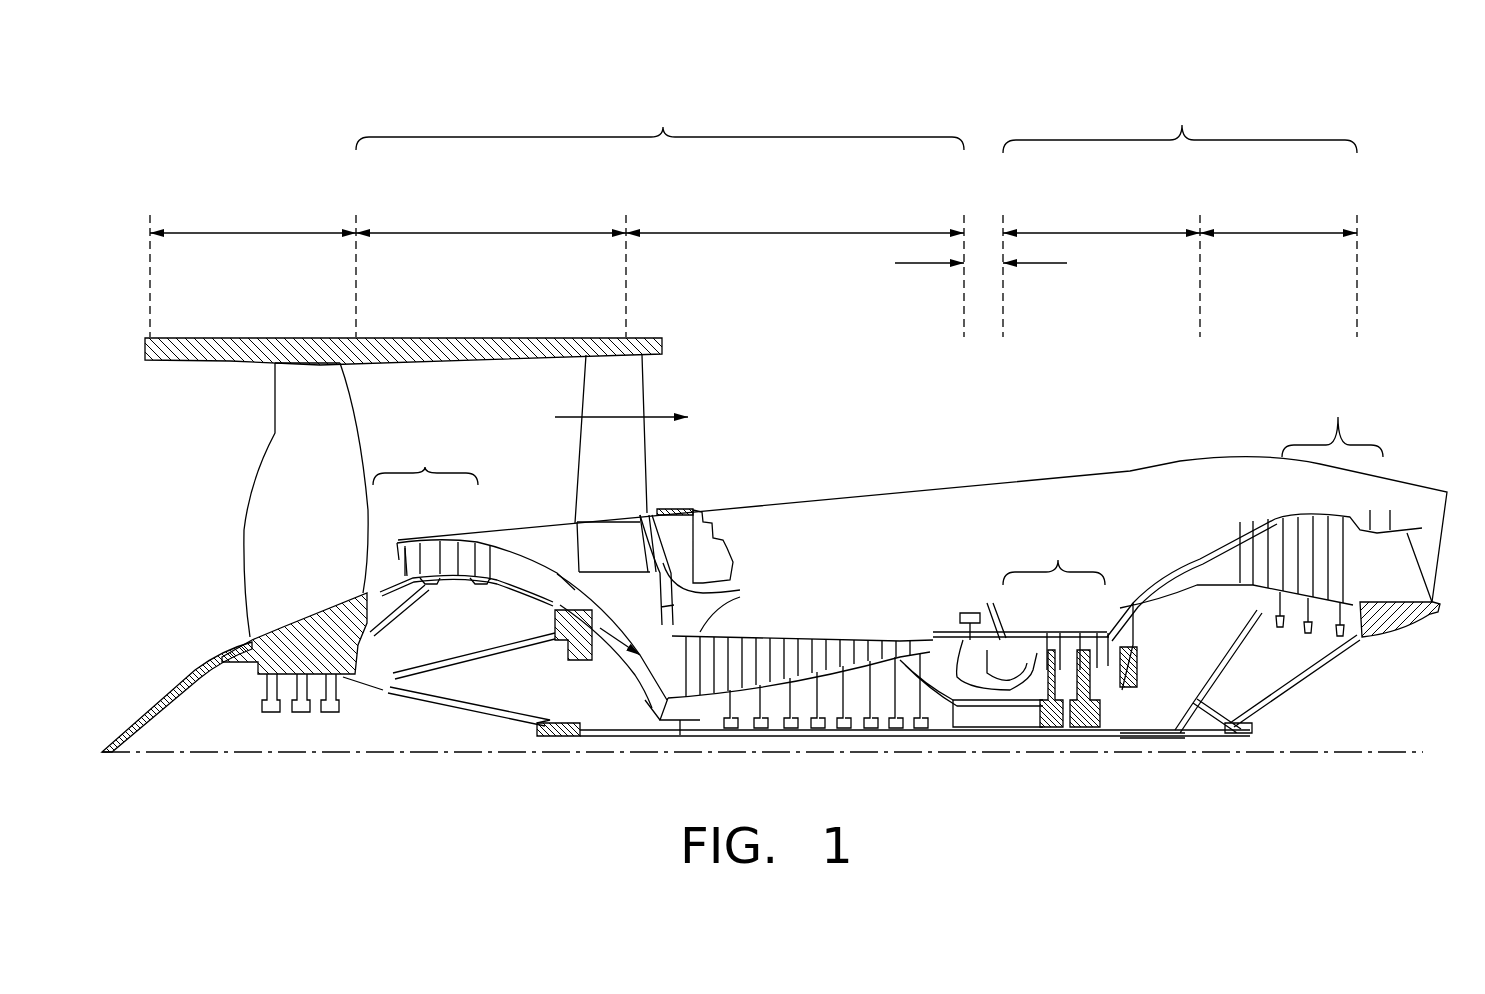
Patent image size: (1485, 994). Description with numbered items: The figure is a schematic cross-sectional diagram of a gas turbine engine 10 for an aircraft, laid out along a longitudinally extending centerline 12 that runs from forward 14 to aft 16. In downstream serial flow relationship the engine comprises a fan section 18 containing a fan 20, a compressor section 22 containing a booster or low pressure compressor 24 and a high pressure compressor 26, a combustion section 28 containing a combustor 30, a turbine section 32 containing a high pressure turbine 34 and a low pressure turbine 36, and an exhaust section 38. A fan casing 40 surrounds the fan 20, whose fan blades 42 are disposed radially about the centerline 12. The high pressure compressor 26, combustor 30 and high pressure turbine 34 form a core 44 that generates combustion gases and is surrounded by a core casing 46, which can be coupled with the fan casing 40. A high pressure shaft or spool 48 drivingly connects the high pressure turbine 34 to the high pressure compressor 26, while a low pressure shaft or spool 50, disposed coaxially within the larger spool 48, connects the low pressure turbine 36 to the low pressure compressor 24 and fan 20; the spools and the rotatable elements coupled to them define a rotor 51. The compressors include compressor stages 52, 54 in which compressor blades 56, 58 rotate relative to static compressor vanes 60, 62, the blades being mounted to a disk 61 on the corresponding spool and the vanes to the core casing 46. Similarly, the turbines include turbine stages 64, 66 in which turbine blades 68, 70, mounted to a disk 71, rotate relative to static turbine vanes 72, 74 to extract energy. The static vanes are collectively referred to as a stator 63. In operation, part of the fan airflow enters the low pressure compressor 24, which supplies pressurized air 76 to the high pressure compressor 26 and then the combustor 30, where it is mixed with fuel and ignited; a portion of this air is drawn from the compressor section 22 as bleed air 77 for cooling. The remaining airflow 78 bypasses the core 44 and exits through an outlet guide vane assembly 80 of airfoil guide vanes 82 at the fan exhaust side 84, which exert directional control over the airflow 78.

The gas turbine engine 10 is at (1372, 262).
The centerline 12 is at (233, 752).
The forward 14 is at (183, 480).
The aft 16 is at (1464, 570).
The fan section 18 is at (255, 232).
The fan 20 is at (227, 596).
The compressor section 22 is at (663, 127).
The low pressure compressor 24 is at (497, 232).
The high pressure compressor 26 is at (795, 232).
The combustion section 28 is at (908, 265).
The combustor 30 is at (995, 620).
The turbine section 32 is at (1182, 125).
The high pressure turbine 34 is at (1102, 232).
The low pressure turbine 36 is at (1277, 232).
The exhaust section 38 is at (1420, 548).
The fan casing 40 is at (392, 337).
The fan blades 42 is at (325, 410).
The core 44 is at (925, 525).
The core casing 46 is at (1185, 555).
The high pressure shaft 48 is at (965, 705).
The low pressure shaft 50 is at (560, 736).
The rotor 51 is at (820, 745).
The compressor stages 52 is at (425, 467).
The compressor stages 54 is at (800, 625).
The compressor blades 56 is at (432, 545).
The compressor blades 58 is at (728, 638).
The static compressor vanes 60 is at (410, 545).
The disk 61 is at (450, 583).
The static compressor vanes 62 is at (698, 632).
The stator 63 is at (1258, 520).
The turbine stages 64 is at (1058, 560).
The turbine stages 66 is at (1338, 430).
The turbine blades 68 is at (1058, 630).
The turbine blades 70 is at (1343, 520).
The disk 71 is at (1258, 600).
The static turbine vanes 72 is at (1040, 628).
The static turbine vanes 74 is at (1325, 520).
The pressurized air 76 is at (592, 660).
The bleed air 77 is at (826, 630).
The airflow 78 is at (568, 417).
The outlet guide vane assembly 80 is at (655, 478).
The airfoil guide vanes 82 is at (575, 452).
The fan exhaust side 84 is at (662, 393).